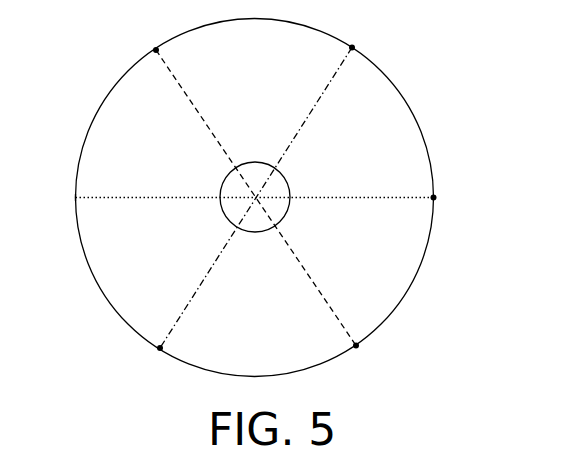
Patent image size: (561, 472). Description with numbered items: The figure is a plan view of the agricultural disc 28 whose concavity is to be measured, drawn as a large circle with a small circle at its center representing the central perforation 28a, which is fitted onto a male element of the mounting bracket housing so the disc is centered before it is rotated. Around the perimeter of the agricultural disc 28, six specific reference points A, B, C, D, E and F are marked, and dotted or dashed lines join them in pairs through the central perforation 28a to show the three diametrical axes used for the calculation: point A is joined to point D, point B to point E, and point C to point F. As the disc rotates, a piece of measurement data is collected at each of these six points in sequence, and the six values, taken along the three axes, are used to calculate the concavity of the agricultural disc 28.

The agricultural disc 28 is at (432, 253).
The central perforation 28a is at (290, 213).
The reference point A is at (363, 33).
The reference point B is at (449, 200).
The reference point C is at (366, 364).
The reference point D is at (147, 365).
The reference point E is at (57, 200).
The reference point F is at (144, 36).